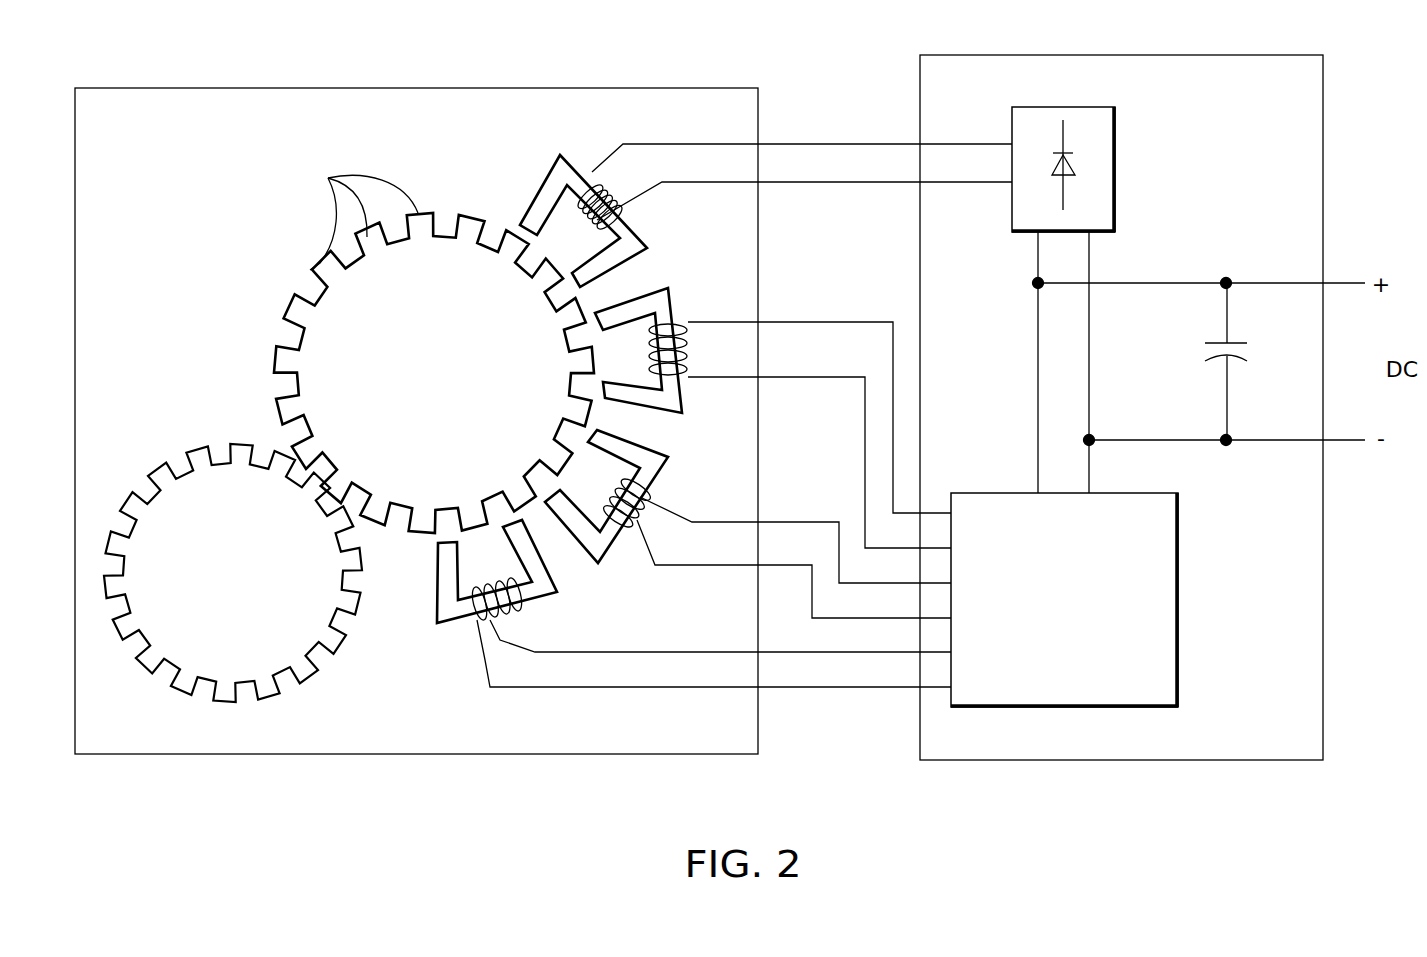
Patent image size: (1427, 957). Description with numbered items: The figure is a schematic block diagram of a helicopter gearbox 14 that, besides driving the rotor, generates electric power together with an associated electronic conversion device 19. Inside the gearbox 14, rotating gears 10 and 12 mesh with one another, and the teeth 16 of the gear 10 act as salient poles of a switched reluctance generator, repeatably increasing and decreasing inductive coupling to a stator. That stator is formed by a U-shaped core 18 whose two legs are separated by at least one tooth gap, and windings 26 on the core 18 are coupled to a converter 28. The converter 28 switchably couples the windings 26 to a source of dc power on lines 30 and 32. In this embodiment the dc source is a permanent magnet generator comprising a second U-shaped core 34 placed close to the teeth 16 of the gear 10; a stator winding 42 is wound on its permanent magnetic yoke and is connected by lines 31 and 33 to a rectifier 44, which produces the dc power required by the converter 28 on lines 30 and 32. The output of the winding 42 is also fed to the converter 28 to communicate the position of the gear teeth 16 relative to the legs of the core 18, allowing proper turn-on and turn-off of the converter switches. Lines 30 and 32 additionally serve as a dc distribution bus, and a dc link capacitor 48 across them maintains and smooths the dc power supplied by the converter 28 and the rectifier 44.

The gear 10 is at (462, 328).
The gear 12 is at (250, 532).
The gearbox 14 is at (312, 745).
The teeth 16 is at (353, 214).
The U-shaped core 18 is at (668, 420).
The electronic conversion device 19 is at (1240, 698).
The windings 26 is at (688, 332).
The converter 28 is at (1031, 679).
The line 30 is at (1038, 397).
The line 31 is at (818, 143).
The line 32 is at (1090, 400).
The line 33 is at (868, 188).
The second U-shaped core 34 is at (533, 200).
The stator winding 42 is at (605, 187).
The rectifier 44 is at (1115, 203).
The dc link capacitor 48 is at (1232, 342).